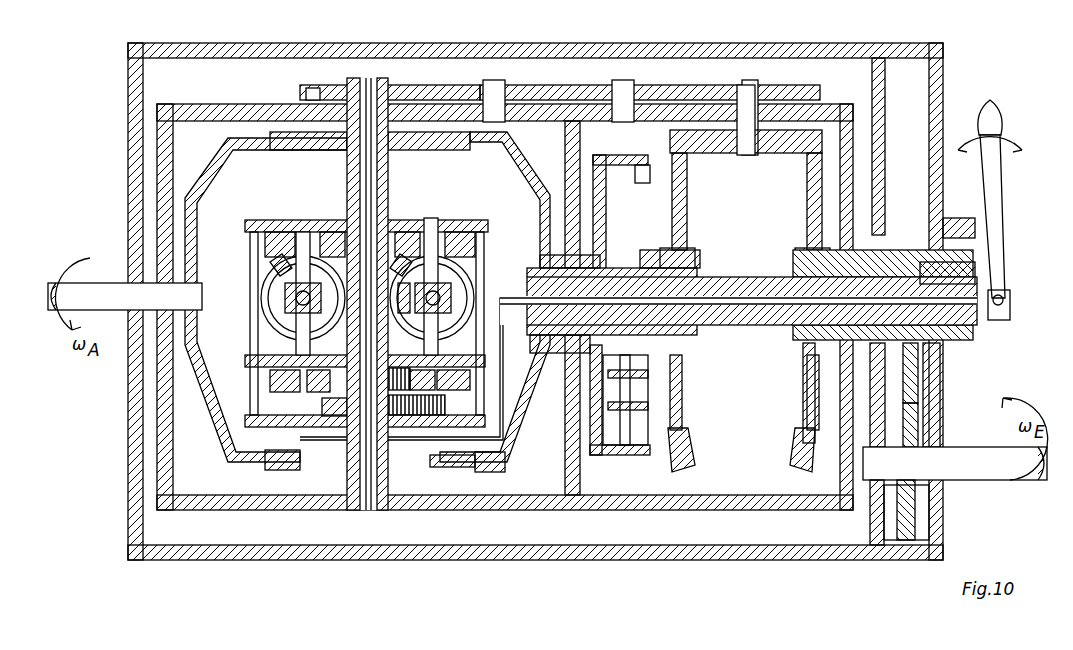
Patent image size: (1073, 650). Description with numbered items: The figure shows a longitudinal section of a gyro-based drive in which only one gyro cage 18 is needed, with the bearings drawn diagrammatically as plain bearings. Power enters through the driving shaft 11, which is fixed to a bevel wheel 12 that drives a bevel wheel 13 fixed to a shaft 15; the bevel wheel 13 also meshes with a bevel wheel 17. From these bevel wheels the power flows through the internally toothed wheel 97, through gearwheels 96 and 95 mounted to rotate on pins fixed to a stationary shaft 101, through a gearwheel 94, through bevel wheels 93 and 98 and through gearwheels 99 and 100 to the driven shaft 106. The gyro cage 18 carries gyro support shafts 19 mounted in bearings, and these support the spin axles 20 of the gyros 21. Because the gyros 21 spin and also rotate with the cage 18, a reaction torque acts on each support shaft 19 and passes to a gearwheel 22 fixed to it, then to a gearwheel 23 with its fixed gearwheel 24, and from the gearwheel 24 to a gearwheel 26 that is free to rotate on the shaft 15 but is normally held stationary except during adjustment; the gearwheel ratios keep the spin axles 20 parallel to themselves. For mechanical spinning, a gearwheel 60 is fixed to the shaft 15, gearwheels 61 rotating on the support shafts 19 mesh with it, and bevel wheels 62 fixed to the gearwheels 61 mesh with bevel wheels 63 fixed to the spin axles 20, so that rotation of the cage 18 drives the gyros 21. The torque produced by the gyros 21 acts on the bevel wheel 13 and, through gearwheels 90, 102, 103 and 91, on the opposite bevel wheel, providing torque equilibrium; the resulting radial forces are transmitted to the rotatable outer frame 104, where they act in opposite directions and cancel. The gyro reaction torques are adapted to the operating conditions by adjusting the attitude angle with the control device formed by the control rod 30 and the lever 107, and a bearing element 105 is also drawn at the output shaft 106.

The driving shaft 11 is at (116, 284).
The bevel wheel 12 is at (190, 215).
The bevel wheel 13 is at (405, 147).
The shaft 15 is at (368, 212).
The bevel wheel 17 is at (540, 210).
The gyro cage 18 is at (400, 222).
The gyro support shaft 19 is at (440, 222).
The spin axle 20 is at (408, 320).
The gyro 21 is at (470, 290).
The gearwheel 22 is at (460, 383).
The gearwheel 23 is at (378, 380).
The gearwheel 24 is at (415, 425).
The gearwheel 26 is at (345, 405).
The control rod 30 is at (500, 400).
The gearwheel 60 is at (320, 270).
The gearwheel 61 is at (405, 272).
The bevel wheel 62 is at (400, 288).
The bevel wheel 63 is at (462, 322).
The gearwheel 90 is at (398, 93).
The gearwheel 91 is at (790, 95).
The bevel wheel 93 is at (686, 208).
The gearwheel 94 is at (636, 252).
The gearwheel 95 is at (640, 378).
The gearwheel 96 is at (640, 410).
The internally toothed wheel 97 is at (668, 445).
The bevel wheel 98 is at (812, 196).
The gearwheel 99 is at (920, 368).
The gearwheel 100 is at (920, 410).
The stationary shaft 101 is at (740, 330).
The gearwheel 102 is at (545, 95).
The gearwheel 103 is at (655, 95).
The rotatable outer frame 104 is at (233, 112).
The bearing 105 is at (933, 532).
The driven shaft 106 is at (945, 452).
The control device 107 is at (1003, 276).